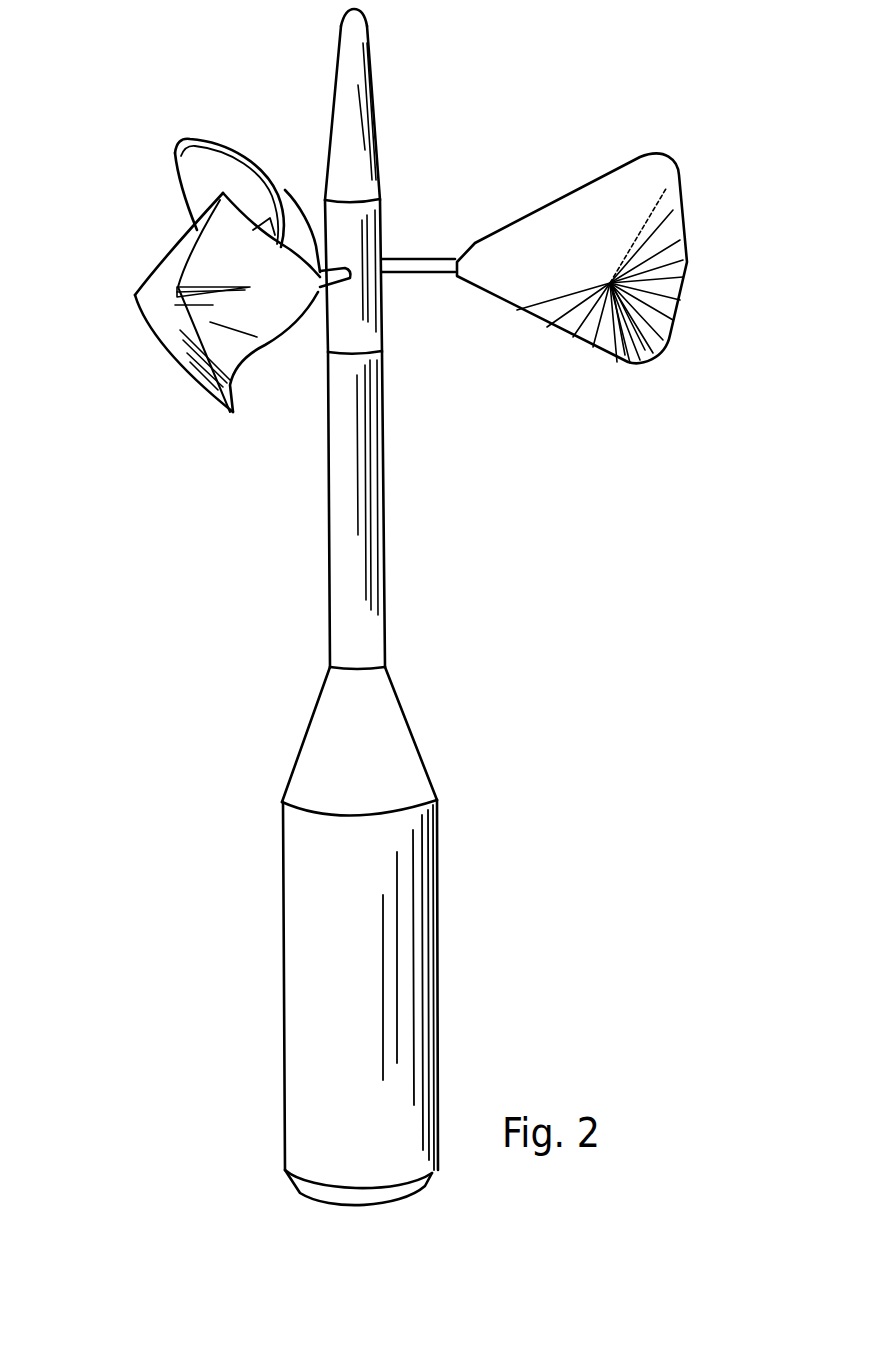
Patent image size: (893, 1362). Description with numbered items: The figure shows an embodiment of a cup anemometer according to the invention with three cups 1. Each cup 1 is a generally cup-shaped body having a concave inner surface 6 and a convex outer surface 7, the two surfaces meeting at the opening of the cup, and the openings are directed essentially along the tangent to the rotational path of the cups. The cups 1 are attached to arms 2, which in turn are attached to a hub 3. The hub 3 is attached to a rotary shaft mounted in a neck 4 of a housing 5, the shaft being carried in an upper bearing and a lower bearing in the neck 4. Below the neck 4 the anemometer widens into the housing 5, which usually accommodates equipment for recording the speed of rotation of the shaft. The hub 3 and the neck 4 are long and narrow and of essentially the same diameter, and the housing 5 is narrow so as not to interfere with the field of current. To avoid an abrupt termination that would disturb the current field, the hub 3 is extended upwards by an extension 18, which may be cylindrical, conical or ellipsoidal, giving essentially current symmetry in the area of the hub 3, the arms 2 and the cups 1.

The cup 1 is at (415, 237).
The arm 2 is at (405, 260).
The hub 3 is at (372, 318).
The neck 4 is at (357, 540).
The housing 5 is at (320, 850).
The concave inner surface 6 is at (253, 317).
The convex outer surface 7 is at (560, 232).
The extension 18 is at (356, 124).